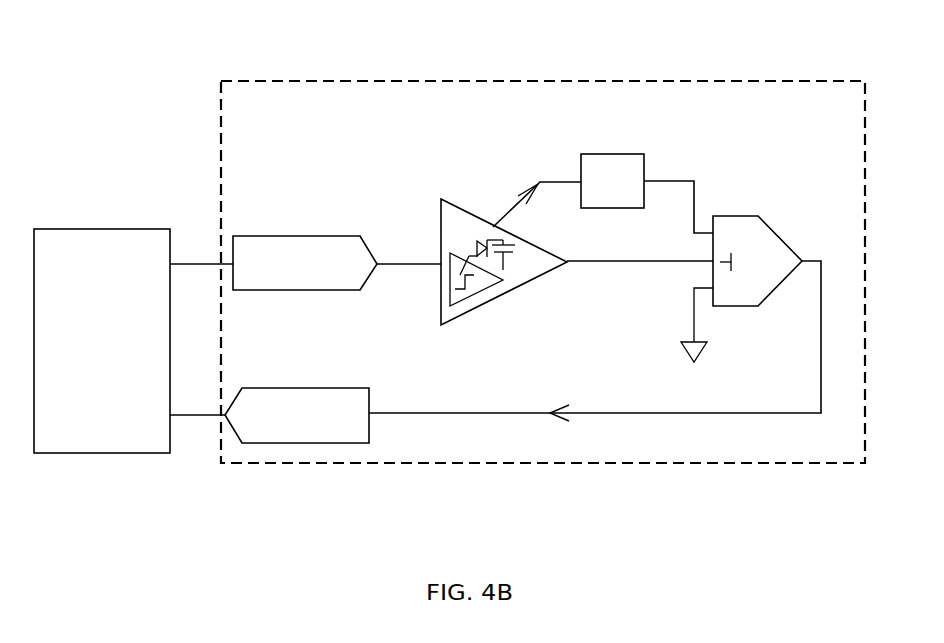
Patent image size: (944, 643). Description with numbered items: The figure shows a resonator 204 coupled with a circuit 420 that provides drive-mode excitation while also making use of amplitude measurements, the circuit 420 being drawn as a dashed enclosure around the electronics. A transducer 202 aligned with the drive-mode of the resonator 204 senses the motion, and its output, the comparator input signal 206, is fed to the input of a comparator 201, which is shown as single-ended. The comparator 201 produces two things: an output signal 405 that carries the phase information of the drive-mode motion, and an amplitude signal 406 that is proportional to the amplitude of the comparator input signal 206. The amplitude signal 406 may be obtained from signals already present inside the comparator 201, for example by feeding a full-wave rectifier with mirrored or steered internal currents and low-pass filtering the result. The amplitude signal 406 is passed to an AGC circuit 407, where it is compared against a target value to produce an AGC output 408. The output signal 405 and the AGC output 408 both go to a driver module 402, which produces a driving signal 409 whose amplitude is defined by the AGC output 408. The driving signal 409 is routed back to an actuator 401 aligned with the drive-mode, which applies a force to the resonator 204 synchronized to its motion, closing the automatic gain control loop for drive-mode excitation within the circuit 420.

The resonator 204 is at (109, 312).
The transducer 202 is at (305, 232).
The comparator input signal 206 is at (409, 256).
The comparator 201 is at (482, 236).
The amplitude signal 406 is at (537, 194).
The AGC circuit 407 is at (643, 150).
The AGC output 408 is at (678, 196).
The output signal 405 is at (640, 250).
The driver module 402 is at (765, 262).
The driving signal 409 is at (595, 341).
The actuator 401 is at (297, 387).
The circuit 420 is at (856, 105).